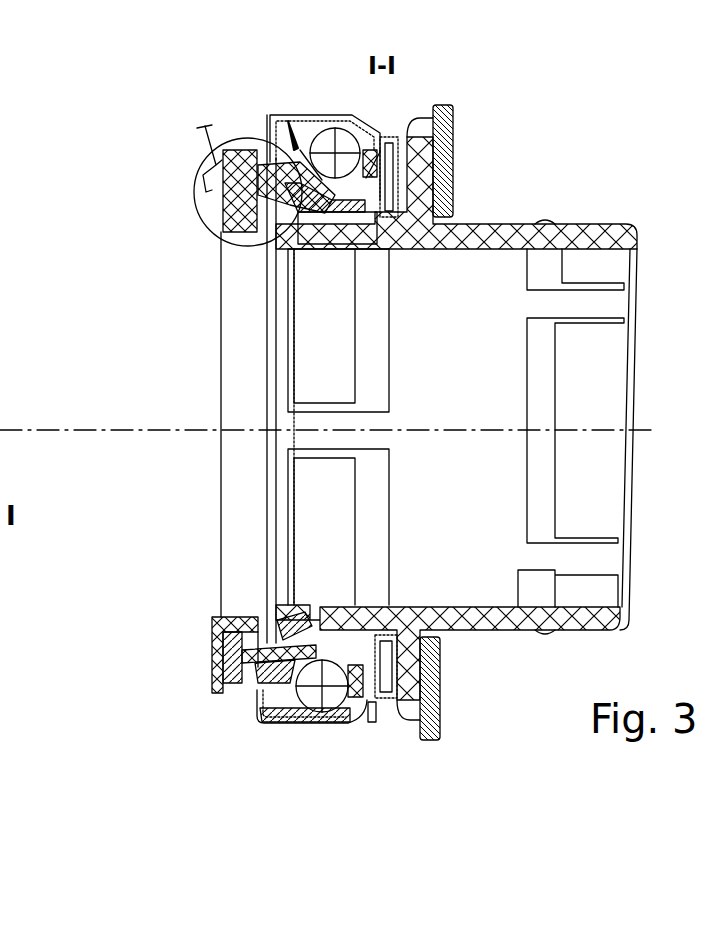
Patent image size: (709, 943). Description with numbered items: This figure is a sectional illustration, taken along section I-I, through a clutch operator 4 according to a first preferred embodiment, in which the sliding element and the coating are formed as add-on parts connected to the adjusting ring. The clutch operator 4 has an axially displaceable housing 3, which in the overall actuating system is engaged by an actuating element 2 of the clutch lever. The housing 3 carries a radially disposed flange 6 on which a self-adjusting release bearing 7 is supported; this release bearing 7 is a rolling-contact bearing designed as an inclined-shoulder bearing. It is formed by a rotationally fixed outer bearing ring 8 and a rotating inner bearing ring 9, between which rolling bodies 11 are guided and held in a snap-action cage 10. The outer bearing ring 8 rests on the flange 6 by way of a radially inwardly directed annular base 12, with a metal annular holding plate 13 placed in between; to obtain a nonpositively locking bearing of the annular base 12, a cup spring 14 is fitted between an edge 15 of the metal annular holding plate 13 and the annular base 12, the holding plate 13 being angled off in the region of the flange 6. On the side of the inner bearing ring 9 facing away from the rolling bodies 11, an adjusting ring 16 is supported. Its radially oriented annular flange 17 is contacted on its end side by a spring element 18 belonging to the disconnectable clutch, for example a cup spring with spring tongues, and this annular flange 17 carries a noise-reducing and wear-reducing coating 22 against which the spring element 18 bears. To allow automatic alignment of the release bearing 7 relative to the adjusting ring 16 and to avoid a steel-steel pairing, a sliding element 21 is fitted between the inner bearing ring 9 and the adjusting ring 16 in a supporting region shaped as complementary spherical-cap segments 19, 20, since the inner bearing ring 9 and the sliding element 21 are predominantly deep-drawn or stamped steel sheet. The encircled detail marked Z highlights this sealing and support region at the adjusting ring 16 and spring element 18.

The actuating element 2 is at (443, 667).
The housing 3 is at (580, 230).
The clutch operator 4 is at (545, 144).
The flange 6 is at (433, 678).
The release bearing 7 is at (290, 125).
The outer bearing ring 8 is at (310, 123).
The inner bearing ring 9 is at (296, 700).
The snap-action cage 10 is at (348, 708).
The rolling bodies 11 is at (300, 722).
The annular base 12 is at (393, 705).
The metal annular holding plate 13 is at (437, 700).
The cup spring 14 is at (372, 722).
The edge 15 is at (380, 158).
The adjusting ring 16 is at (235, 208).
The annular flange 17 is at (255, 660).
The spring element 18 is at (207, 153).
The spherical-cap segment 19 is at (280, 203).
The spherical-cap segment 20 is at (335, 208).
The sliding element 21 is at (285, 665).
The coating 22 is at (215, 648).
The detail Z is at (193, 185).